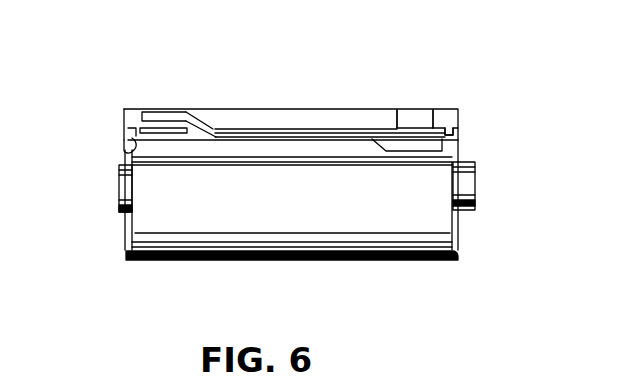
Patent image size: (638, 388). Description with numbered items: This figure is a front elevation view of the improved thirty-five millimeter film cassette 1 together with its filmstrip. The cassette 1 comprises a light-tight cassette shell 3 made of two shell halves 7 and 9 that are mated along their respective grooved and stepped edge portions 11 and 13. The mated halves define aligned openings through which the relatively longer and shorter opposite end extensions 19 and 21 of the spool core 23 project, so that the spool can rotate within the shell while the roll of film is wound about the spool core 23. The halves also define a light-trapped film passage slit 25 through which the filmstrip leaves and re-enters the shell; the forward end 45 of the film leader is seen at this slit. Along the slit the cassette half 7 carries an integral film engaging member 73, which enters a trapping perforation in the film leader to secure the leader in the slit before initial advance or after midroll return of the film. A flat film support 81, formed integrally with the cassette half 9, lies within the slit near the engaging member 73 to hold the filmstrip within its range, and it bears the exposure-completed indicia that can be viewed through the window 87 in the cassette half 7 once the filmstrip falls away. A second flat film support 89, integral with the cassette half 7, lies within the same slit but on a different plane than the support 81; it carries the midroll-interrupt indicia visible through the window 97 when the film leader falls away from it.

The film cassette 1 is at (468, 92).
The cassette shell 3 is at (316, 261).
The shell half 7 is at (458, 116).
The shell half 9 is at (196, 262).
The grooved and stepped edge portion 11 is at (128, 133).
The grooved and stepped edge portion 13 is at (132, 140).
The longer end extension 19 is at (476, 186).
The shorter end extension 21 is at (119, 202).
The spool core 23 is at (476, 200).
The film passage slit 25 is at (318, 129).
The forward end of the film leader 45 is at (266, 130).
The film engaging member 73 is at (408, 128).
The film support 81 is at (405, 151).
The window 87 is at (420, 118).
The film support 89 is at (167, 128).
The window 97 is at (175, 111).